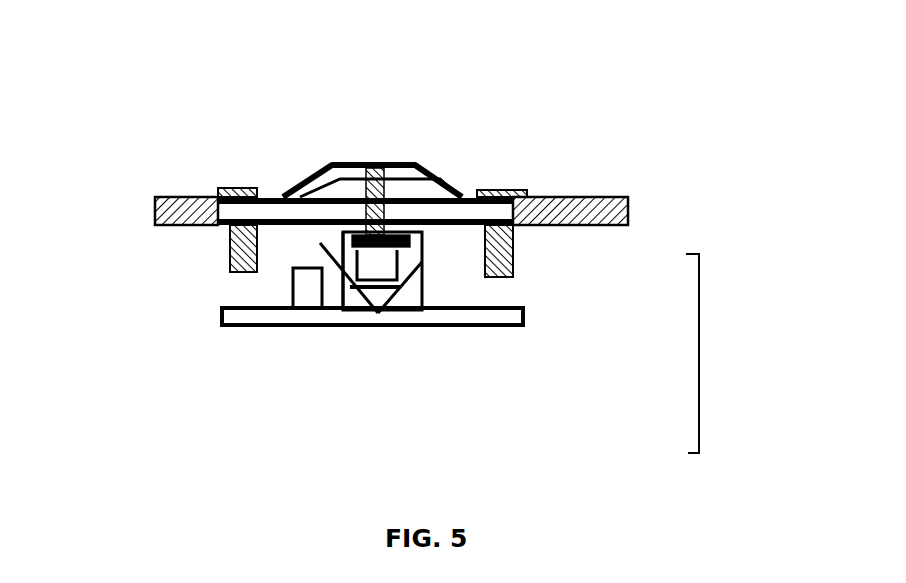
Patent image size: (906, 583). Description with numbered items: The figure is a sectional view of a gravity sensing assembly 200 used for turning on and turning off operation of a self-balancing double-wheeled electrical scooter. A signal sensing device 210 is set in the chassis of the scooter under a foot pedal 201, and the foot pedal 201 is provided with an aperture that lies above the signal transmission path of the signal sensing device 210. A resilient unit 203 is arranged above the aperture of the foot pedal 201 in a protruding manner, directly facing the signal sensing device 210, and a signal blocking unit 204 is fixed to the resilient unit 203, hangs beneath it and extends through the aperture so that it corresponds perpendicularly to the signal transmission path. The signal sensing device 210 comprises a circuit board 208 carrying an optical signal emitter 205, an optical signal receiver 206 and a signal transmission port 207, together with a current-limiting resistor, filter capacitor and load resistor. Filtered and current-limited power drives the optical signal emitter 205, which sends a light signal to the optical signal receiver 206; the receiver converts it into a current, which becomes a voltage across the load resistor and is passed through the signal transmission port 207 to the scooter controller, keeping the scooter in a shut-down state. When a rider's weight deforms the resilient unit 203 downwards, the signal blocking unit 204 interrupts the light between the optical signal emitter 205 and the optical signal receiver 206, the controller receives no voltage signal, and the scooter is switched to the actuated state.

The gravity sensing assembly 200 is at (105, 53).
The foot pedal 201 is at (598, 212).
The resilient unit 203 is at (408, 162).
The signal blocking unit 204 is at (414, 174).
The optical signal emitter 205 is at (409, 268).
The optical signal receiver 206 is at (333, 249).
The signal transmission port 207 is at (312, 294).
The circuit board 208 is at (446, 324).
The signal sensing device 210 is at (726, 353).